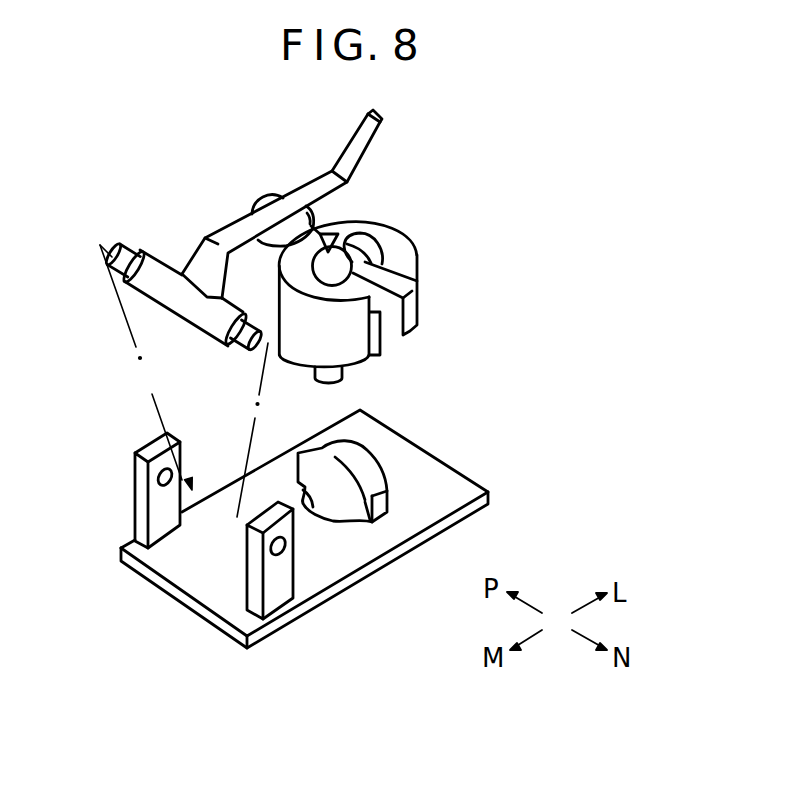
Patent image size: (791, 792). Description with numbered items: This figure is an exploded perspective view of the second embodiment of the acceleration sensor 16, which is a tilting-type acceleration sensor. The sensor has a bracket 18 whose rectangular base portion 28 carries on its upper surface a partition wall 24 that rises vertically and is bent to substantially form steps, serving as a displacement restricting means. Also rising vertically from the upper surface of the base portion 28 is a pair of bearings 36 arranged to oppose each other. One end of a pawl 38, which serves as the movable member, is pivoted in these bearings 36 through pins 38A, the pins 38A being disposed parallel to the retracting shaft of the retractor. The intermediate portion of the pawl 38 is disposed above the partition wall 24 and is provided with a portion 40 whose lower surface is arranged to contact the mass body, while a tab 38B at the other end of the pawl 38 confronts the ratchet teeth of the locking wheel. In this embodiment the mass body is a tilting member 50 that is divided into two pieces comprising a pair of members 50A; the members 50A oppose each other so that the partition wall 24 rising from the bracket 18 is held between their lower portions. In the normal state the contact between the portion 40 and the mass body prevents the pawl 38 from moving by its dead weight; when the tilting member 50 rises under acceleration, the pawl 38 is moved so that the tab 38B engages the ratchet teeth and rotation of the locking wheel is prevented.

The acceleration sensor 16 is at (172, 154).
The pawl 38 is at (271, 190).
The pins 38A is at (122, 243).
The tab 38B is at (379, 141).
The portion 40 is at (315, 216).
The tilting member 50 is at (426, 234).
The members 50A is at (418, 306).
The bracket 18 is at (145, 591).
The base portion 28 is at (330, 587).
The bearings 36 is at (147, 505).
The partition wall 24 is at (372, 522).